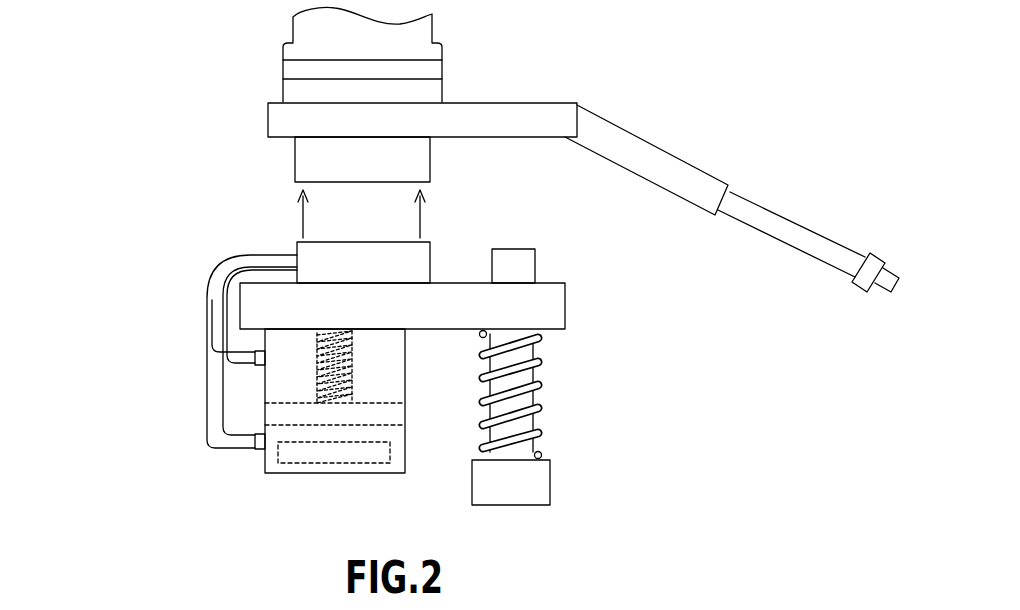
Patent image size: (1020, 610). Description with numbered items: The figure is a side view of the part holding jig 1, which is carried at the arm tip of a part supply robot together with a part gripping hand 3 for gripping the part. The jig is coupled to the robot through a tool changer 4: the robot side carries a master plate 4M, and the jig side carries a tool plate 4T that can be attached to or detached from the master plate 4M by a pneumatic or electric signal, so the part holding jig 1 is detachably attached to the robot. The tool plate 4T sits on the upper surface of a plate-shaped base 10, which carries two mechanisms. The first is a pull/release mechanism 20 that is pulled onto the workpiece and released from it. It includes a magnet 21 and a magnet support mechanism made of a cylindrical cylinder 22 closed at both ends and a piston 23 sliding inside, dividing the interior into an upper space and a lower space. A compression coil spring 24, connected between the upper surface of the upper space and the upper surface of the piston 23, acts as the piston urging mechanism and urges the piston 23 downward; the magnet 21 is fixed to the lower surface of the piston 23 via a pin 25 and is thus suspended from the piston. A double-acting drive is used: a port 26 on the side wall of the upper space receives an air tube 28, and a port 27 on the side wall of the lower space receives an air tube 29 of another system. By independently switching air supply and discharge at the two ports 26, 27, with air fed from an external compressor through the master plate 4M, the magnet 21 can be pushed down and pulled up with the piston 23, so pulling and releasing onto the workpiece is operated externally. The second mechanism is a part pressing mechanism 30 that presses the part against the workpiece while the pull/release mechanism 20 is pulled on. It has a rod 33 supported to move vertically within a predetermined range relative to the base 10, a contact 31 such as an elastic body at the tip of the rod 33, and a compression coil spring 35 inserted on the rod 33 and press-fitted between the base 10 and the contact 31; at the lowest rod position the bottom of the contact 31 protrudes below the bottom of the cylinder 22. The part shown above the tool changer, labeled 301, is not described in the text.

The part holding jig 1 is at (645, 310).
The part gripping hand 3 is at (643, 157).
The tool changer 4 is at (190, 165).
The master plate 4M is at (303, 154).
The tool plate 4T is at (302, 248).
The base 10 is at (458, 298).
The pull/release mechanism 20 is at (147, 362).
The magnet 21 is at (322, 455).
The cylinder 22 is at (287, 473).
The piston 23 is at (362, 413).
The compression coil spring 24 is at (355, 372).
The pin 25 is at (343, 430).
The port 26 is at (257, 371).
The port 27 is at (258, 453).
The air tube 28 is at (218, 283).
The air tube 29 is at (222, 409).
The part pressing mechanism 30 is at (595, 403).
The contact 31 is at (542, 482).
The rod 33 is at (523, 272).
The compression coil spring 35 is at (540, 388).
The member 301 is at (292, 89).